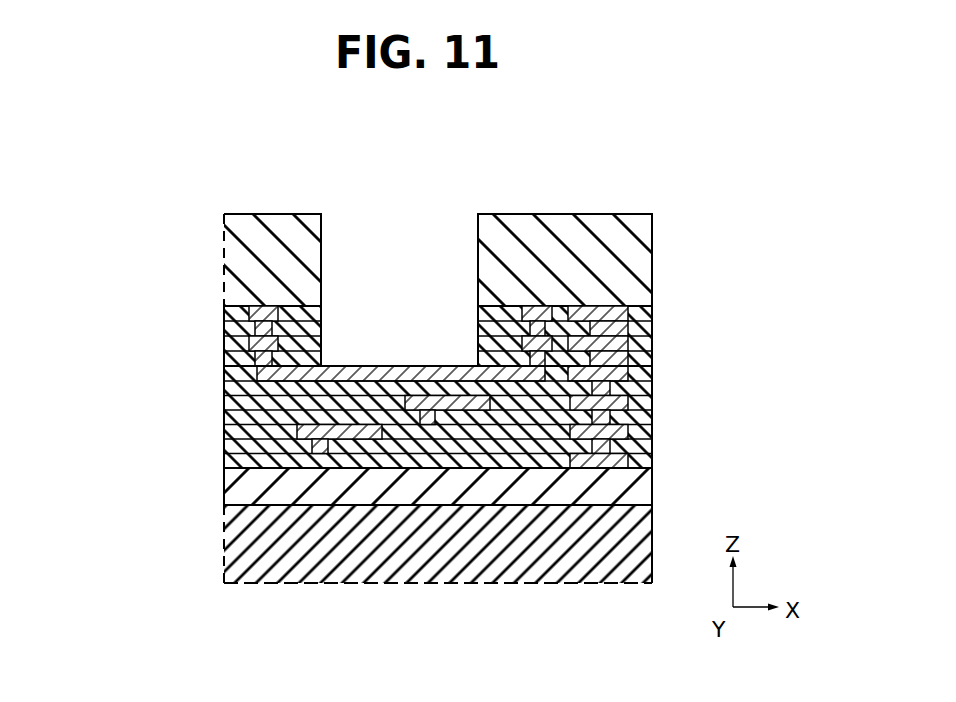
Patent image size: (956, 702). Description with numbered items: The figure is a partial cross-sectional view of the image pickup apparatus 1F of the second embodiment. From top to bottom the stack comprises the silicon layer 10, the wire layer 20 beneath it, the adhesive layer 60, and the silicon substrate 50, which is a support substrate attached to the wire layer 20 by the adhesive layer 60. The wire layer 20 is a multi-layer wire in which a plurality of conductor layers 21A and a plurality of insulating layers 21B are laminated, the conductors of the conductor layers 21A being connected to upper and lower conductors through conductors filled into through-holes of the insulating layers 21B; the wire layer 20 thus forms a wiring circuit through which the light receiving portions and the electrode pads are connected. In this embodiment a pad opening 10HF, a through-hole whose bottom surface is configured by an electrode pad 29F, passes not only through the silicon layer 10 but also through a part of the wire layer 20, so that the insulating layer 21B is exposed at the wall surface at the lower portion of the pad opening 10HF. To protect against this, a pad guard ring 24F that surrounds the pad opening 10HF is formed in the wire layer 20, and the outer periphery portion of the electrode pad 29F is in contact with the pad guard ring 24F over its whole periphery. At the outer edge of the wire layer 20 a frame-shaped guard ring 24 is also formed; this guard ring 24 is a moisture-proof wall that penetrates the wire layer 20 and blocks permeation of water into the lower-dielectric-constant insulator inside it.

The image pickup apparatus 1F is at (106, 180).
The silicon layer 10 is at (224, 262).
The pad opening 10HF is at (400, 232).
The wire layer 20 is at (365, 314).
The conductor layers 21A is at (393, 271).
The insulating layers 21B is at (224, 376).
The pad guard ring 24F is at (266, 316).
The guard ring 24 is at (605, 314).
The electrode pad 29F is at (447, 366).
The adhesive layer 60 is at (224, 497).
The silicon substrate 50 is at (224, 546).